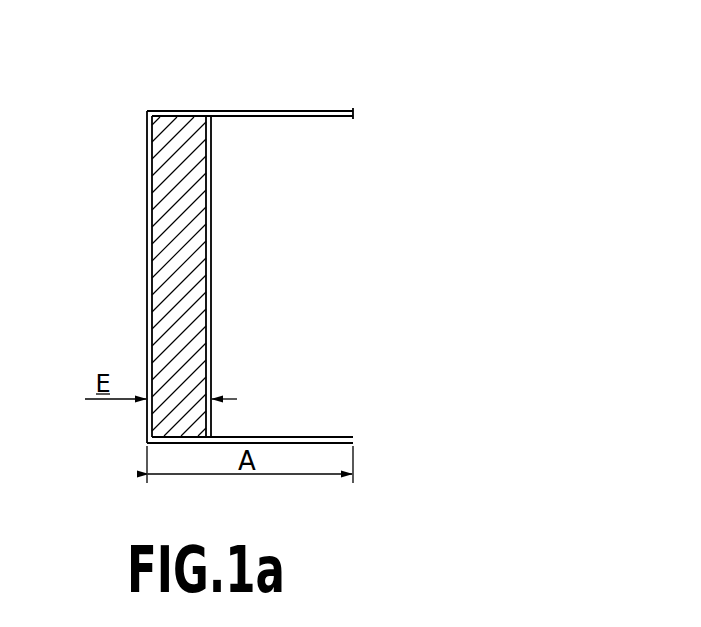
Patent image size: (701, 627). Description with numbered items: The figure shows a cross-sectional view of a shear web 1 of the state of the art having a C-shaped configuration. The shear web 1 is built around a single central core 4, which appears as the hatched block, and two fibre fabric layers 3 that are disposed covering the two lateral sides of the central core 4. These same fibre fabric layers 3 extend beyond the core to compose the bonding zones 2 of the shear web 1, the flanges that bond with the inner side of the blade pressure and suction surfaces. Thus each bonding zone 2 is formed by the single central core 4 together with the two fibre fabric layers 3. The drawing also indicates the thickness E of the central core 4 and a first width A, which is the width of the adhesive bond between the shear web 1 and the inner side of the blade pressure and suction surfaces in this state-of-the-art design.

The shear web 1 is at (228, 264).
The bonding zone 2 is at (248, 109).
The fibre fabric layer 3 is at (147, 317).
The central core 4 is at (170, 197).